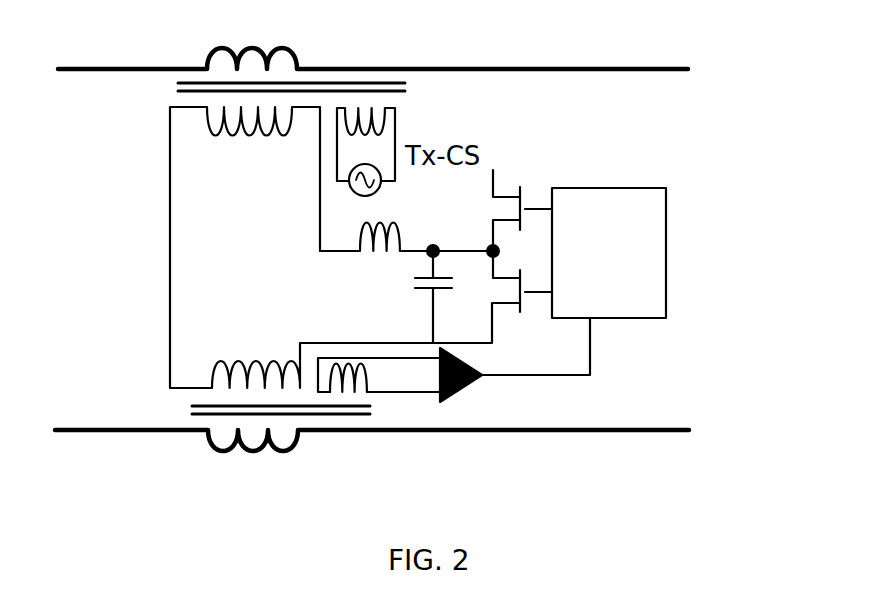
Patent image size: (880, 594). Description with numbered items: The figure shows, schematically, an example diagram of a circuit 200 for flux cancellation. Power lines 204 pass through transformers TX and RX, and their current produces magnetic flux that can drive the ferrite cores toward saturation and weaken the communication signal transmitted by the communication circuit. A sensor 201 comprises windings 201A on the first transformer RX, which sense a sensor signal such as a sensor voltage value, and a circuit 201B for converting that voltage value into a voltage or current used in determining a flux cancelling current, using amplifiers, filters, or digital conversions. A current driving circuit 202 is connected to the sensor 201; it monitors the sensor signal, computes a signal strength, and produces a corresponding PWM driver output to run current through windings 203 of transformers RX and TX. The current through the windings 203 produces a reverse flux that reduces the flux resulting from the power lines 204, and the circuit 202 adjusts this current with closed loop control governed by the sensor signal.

The circuit for flux cancellation 200 is at (647, 28).
The sensor 201 is at (464, 407).
The windings 201A is at (340, 395).
The circuit for converting the sensor voltage value 201B is at (458, 395).
The current driving circuit 202 is at (617, 238).
The windings 203 is at (207, 133).
The power lines 204 is at (658, 77).